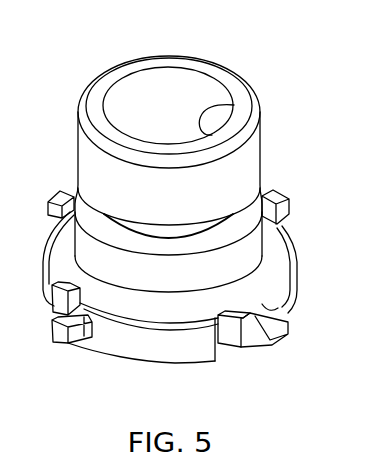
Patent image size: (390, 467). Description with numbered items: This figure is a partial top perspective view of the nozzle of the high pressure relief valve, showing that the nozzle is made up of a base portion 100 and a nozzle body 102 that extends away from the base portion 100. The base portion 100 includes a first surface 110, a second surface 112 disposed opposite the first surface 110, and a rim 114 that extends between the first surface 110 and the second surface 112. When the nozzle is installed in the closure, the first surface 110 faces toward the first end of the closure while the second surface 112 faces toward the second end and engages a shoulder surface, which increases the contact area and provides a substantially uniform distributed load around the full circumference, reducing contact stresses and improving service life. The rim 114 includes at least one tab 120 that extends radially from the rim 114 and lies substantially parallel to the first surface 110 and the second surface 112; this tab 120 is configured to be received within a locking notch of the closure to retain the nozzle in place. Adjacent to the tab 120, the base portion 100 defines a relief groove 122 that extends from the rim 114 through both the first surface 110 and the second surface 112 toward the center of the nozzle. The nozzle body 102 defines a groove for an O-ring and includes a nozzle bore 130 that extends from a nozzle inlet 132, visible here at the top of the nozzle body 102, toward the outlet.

The base portion 100 is at (193, 297).
The nozzle body 102 is at (272, 155).
The first surface 110 is at (137, 327).
The second surface 112 is at (218, 360).
The rim 114 is at (109, 350).
The tab 120 is at (67, 340).
The relief groove 122 is at (54, 309).
The nozzle bore 130 is at (218, 113).
The nozzle inlet 132 is at (222, 68).